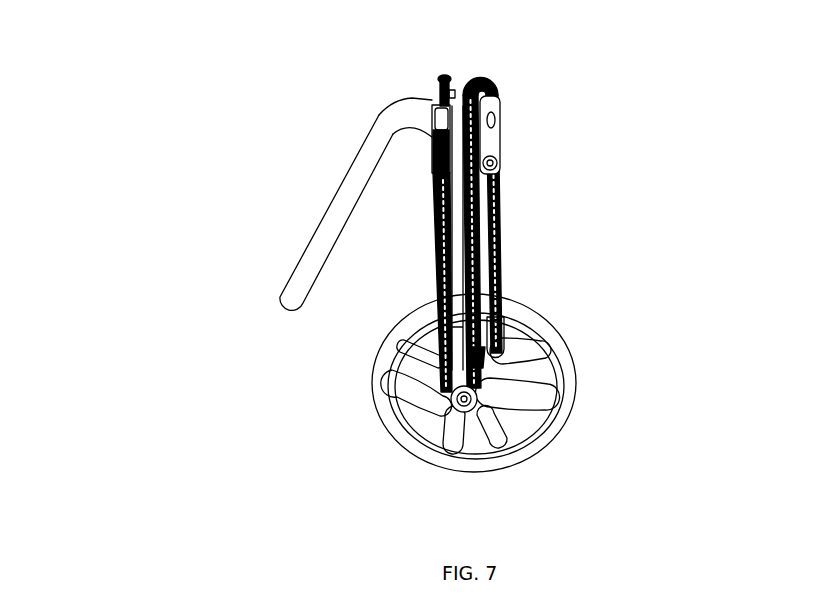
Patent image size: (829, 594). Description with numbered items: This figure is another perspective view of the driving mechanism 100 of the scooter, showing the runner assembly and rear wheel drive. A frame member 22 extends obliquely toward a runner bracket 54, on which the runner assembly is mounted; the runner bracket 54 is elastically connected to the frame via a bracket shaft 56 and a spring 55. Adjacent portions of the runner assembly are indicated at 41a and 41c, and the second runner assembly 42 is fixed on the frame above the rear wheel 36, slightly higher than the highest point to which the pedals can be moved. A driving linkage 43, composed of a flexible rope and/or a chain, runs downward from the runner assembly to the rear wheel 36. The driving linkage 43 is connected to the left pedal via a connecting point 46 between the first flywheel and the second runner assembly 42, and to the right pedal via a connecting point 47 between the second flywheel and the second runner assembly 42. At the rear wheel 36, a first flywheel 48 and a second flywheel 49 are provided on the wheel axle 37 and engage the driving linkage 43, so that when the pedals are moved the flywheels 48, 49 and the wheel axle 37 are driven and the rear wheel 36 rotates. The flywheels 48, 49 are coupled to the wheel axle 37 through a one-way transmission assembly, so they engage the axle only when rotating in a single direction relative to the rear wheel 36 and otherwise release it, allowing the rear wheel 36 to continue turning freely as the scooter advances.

The driving mechanism 100 is at (657, 198).
The fork arm 22 is at (337, 197).
The fork arm end portion 41a is at (420, 122).
The fork lower portion 41c is at (430, 170).
The runner bracket 54 is at (432, 108).
The spring 55 is at (440, 100).
The bracket shaft 56 is at (452, 76).
The second runner assembly 42 is at (497, 82).
The driving linkage 43 is at (498, 197).
The connecting point 47 is at (496, 161).
The second flywheel 49 is at (490, 320).
The connecting point 46 is at (490, 353).
The rear wheel 36 is at (565, 387).
The wheel axle 37 is at (470, 402).
The first flywheel 48 is at (468, 414).